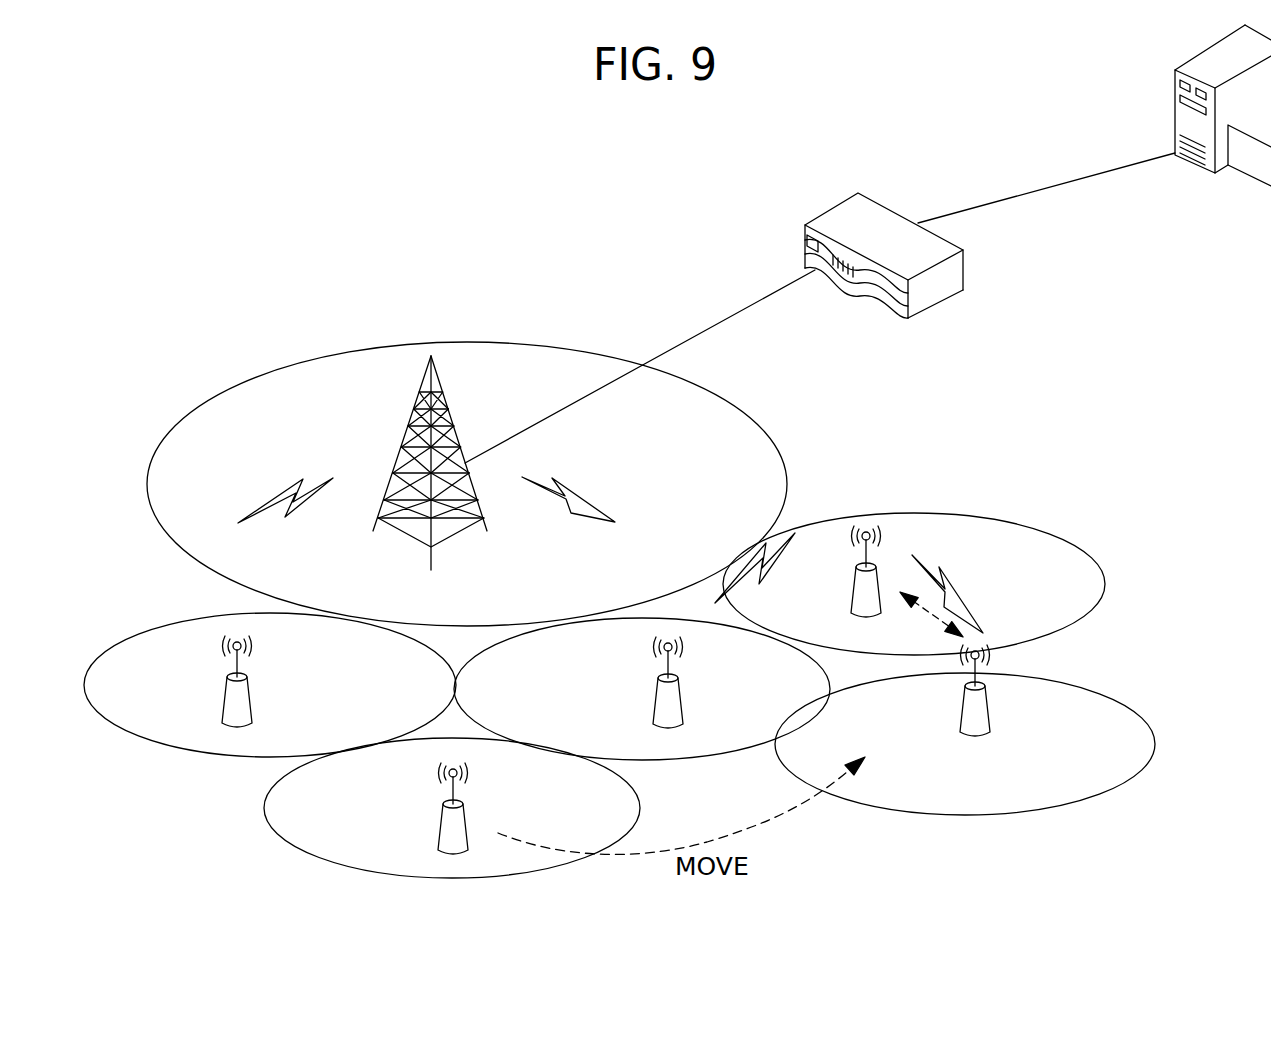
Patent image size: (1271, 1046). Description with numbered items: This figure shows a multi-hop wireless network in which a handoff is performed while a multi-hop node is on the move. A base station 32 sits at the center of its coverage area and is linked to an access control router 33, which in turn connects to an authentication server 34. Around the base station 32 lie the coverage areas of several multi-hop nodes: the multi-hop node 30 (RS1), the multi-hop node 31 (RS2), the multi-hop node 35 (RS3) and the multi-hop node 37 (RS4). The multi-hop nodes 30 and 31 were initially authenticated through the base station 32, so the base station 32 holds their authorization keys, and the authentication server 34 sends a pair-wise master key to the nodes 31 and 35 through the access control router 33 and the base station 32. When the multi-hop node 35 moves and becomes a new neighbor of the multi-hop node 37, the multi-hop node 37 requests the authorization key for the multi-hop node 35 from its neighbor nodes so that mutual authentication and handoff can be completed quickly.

The multi-hop node 30 is at (670, 718).
The multi-hop node 31 is at (233, 700).
The base station 32 is at (450, 410).
The access control router 33 is at (837, 217).
The authentication server 34 is at (1188, 120).
The multi-hop node 35 is at (448, 847).
The multi-hop node 37 is at (873, 582).